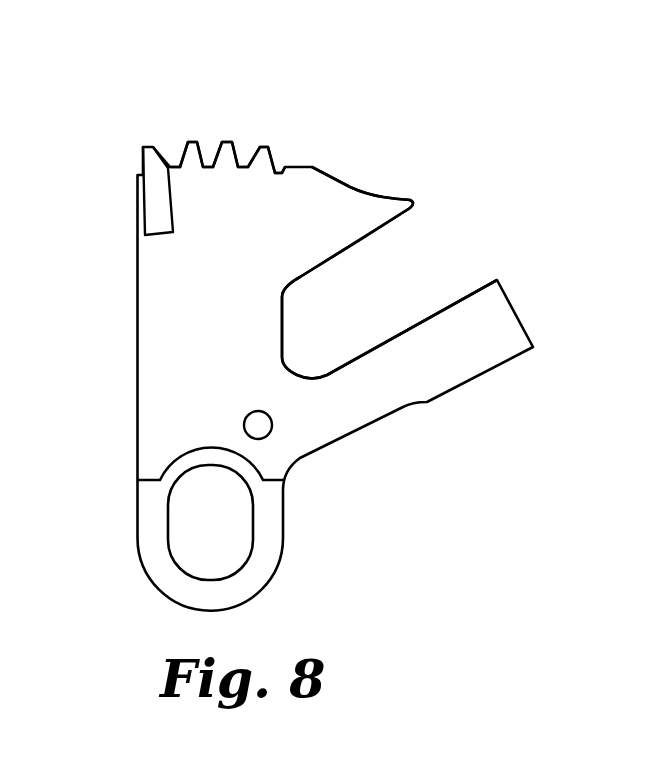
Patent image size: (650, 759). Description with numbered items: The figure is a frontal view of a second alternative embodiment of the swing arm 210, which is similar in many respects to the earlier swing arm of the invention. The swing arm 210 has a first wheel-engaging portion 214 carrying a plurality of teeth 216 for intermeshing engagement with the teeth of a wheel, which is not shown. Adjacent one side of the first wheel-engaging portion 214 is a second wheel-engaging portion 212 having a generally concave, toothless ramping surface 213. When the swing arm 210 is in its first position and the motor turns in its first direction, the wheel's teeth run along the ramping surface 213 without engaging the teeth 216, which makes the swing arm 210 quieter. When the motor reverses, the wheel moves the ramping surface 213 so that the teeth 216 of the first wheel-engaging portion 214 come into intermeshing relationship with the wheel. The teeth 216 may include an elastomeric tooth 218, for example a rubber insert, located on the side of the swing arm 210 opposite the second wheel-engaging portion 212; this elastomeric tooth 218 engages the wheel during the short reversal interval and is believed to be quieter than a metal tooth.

The swing arm 210 is at (296, 340).
The second wheel-engaging portion 212 is at (347, 235).
The ramping surface 213 is at (358, 189).
The first wheel-engaging portion 214 is at (198, 195).
The teeth 216 is at (265, 143).
The elastomeric tooth 218 is at (150, 146).